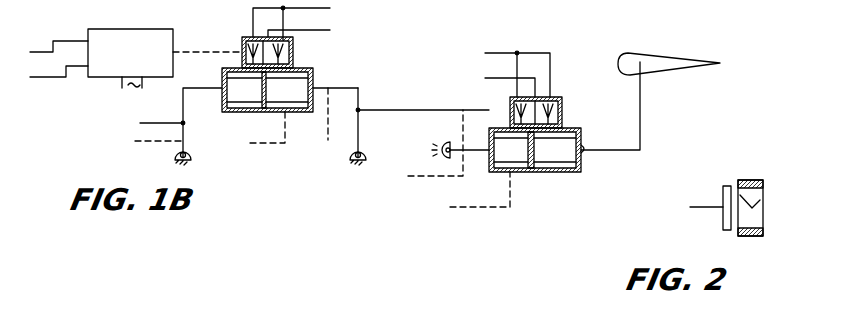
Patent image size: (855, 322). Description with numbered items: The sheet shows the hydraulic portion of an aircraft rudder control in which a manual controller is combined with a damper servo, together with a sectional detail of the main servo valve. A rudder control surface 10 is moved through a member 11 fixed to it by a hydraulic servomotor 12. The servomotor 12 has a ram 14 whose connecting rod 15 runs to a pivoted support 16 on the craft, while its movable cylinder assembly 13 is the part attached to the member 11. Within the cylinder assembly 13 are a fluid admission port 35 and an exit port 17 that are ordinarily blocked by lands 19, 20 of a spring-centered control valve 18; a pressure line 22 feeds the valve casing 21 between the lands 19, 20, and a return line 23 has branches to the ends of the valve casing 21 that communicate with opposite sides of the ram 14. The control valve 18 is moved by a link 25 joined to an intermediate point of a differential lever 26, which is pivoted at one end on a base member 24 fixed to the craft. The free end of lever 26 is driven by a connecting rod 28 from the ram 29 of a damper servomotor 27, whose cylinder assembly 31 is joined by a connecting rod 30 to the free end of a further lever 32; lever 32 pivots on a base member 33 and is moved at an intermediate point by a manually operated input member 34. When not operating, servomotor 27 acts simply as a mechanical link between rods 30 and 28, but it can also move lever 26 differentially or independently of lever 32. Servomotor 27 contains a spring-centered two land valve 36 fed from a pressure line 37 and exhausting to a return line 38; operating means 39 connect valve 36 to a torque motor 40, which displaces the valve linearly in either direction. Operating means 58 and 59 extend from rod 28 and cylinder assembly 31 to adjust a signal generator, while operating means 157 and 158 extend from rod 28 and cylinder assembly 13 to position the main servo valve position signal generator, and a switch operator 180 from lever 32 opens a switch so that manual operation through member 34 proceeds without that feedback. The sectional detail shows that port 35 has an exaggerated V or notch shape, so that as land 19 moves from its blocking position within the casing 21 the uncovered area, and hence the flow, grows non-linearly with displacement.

In FIG. 1B, the rudder control surface 10 is at (665, 58).
In FIG. 1B, the member 11 is at (641, 110).
In FIG. 1B, the hydraulic servomotor 12 is at (535, 161).
In FIG. 1B, the cylinder assembly 13 is at (555, 172).
In FIG. 1B, the ram 14 is at (528, 157).
In FIG. 1B, the connecting rod 15 is at (480, 139).
In FIG. 1B, the pivoted support 16 is at (442, 142).
In FIG. 1B, the fluid exit port 17 is at (545, 130).
In FIG. 1B, the pilot stage 18 is at (510, 110).
In FIG. 1B, the land 19 is at (520, 101).
In FIG. 2, the land 19 is at (725, 230).
In FIG. 1B, the land 20 is at (562, 103).
In FIG. 1B, the valve casing 21 is at (563, 116).
In FIG. 2, the valve casing 21 is at (749, 180).
In FIG. 1B, the pressure line 22 is at (508, 78).
In FIG. 1B, the return line 23 is at (504, 53).
In FIG. 1B, the base member 24 is at (353, 156).
In FIG. 1B, the link 25 is at (411, 110).
In FIG. 1B, the differential lever 26 is at (360, 109).
In FIG. 1B, the servomotor 27 is at (368, 48).
In FIG. 1B, the connecting rod 28 is at (343, 88).
In FIG. 1B, the ram 29 is at (262, 92).
In FIG. 1B, the connecting rod 30 is at (210, 88).
In FIG. 1B, the cylinder assembly 31 is at (222, 99).
In FIG. 1B, the lever 32 is at (183, 135).
In FIG. 1B, the base member 33 is at (198, 155).
In FIG. 1B, the manually operated input member 34 is at (164, 122).
In FIG. 1B, the fluid admission port 35 is at (528, 132).
In FIG. 2, the fluid admission port 35 is at (760, 209).
In FIG. 1B, the two land valve 36 is at (250, 44).
In FIG. 1B, the pressure line 37 is at (318, 30).
In FIG. 1B, the return line 38 is at (287, 8).
In FIG. 1B, the operating means 39 is at (192, 50).
In FIG. 1B, the torque motor 40 is at (122, 29).
In FIG. 1B, the operating means 58 is at (327, 128).
In FIG. 1B, the operating means 59 is at (264, 143).
In FIG. 1B, the operating means 157 is at (430, 171).
In FIG. 1B, the operating means 158 is at (452, 206).
In FIG. 1B, the switch operator 180 is at (161, 141).